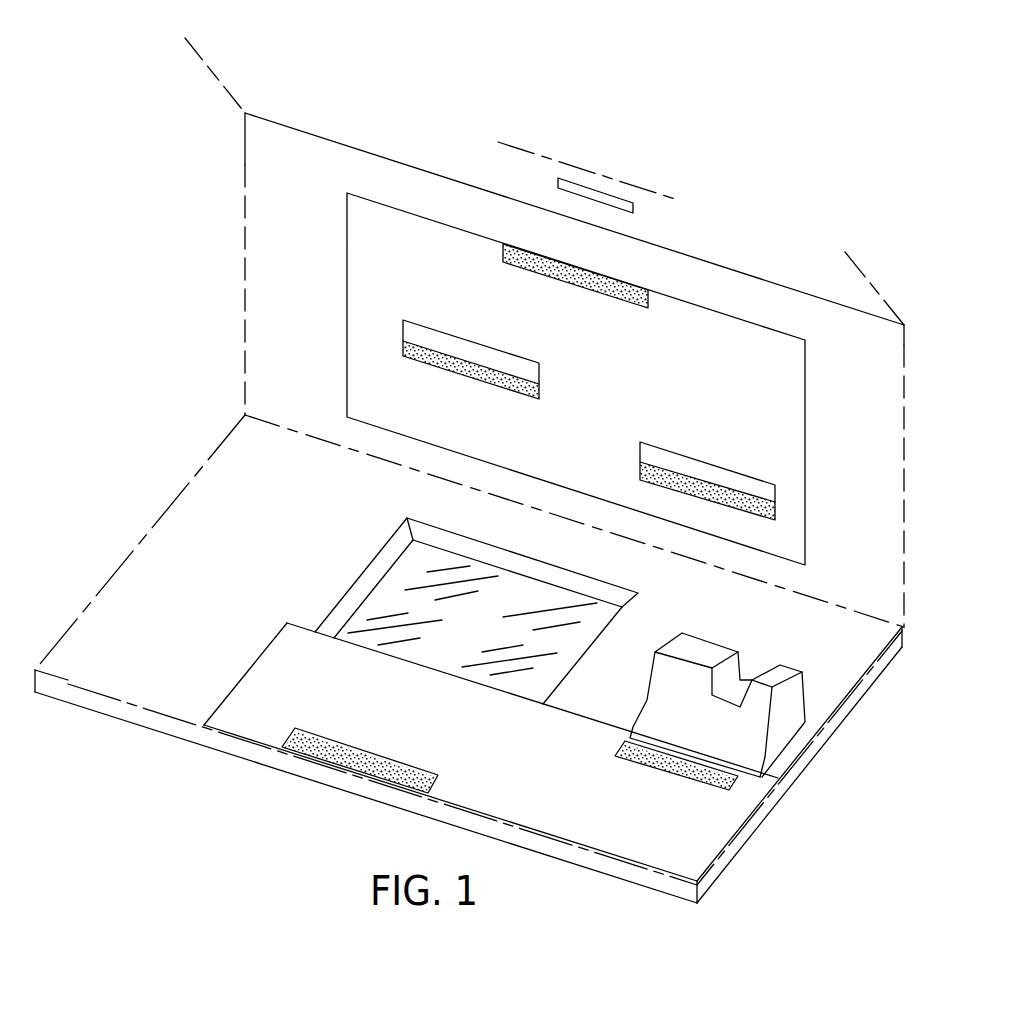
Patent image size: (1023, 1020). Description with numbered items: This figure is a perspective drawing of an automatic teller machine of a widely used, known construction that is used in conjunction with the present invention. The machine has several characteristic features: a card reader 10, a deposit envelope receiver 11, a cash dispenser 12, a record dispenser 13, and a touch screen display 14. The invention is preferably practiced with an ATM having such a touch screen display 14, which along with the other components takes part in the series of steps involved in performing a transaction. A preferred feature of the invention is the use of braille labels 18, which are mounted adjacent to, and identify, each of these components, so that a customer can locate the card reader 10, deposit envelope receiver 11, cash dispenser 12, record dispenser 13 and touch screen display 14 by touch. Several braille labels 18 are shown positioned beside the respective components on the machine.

The card reader 10 is at (803, 680).
The deposit envelope receiver 11 is at (760, 490).
The cash dispenser 12 is at (422, 332).
The record dispenser 13 is at (610, 190).
The touch screen display 14 is at (399, 602).
The braille labels 18 is at (625, 275).